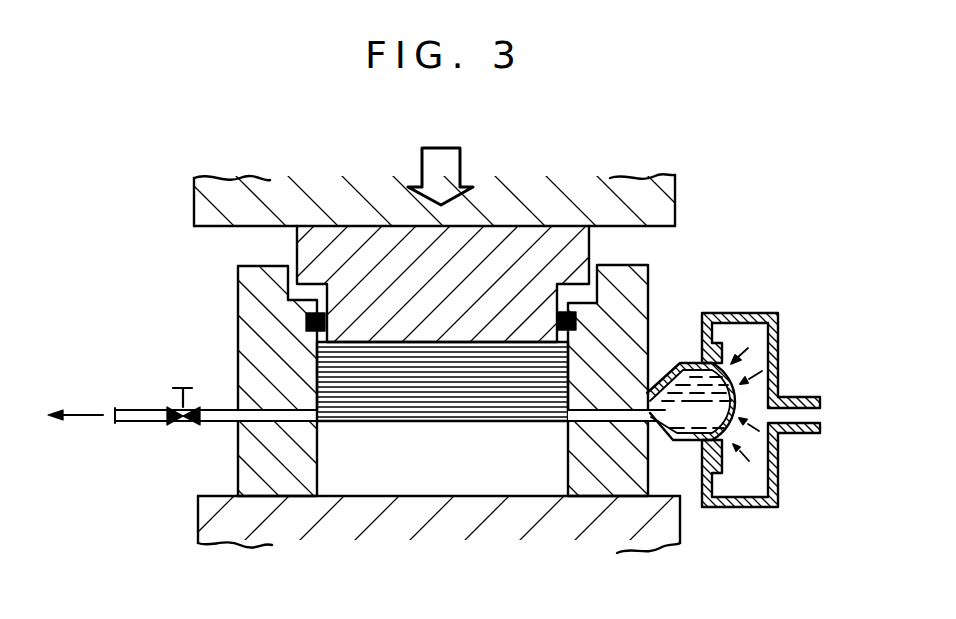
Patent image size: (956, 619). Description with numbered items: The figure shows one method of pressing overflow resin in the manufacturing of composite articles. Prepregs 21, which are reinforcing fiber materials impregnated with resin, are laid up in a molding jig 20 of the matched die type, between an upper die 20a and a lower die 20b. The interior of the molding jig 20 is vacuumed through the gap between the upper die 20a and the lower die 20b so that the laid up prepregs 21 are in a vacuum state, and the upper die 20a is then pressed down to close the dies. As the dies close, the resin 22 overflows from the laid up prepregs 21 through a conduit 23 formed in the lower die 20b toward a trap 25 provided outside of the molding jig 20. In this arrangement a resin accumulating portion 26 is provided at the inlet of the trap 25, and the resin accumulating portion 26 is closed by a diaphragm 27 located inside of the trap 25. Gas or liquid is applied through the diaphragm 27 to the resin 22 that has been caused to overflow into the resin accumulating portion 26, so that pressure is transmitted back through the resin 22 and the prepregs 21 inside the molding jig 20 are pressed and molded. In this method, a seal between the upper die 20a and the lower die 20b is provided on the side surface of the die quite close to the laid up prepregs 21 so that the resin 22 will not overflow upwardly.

The molding jig 20 is at (230, 326).
The upper die 20a is at (300, 250).
The lower die 20b is at (248, 472).
The prepregs 21 is at (353, 415).
The resin 22 is at (680, 362).
The conduit 23 is at (603, 412).
The trap 25 is at (782, 482).
The resin accumulating portion 26 is at (690, 437).
The diaphragm 27 is at (723, 350).